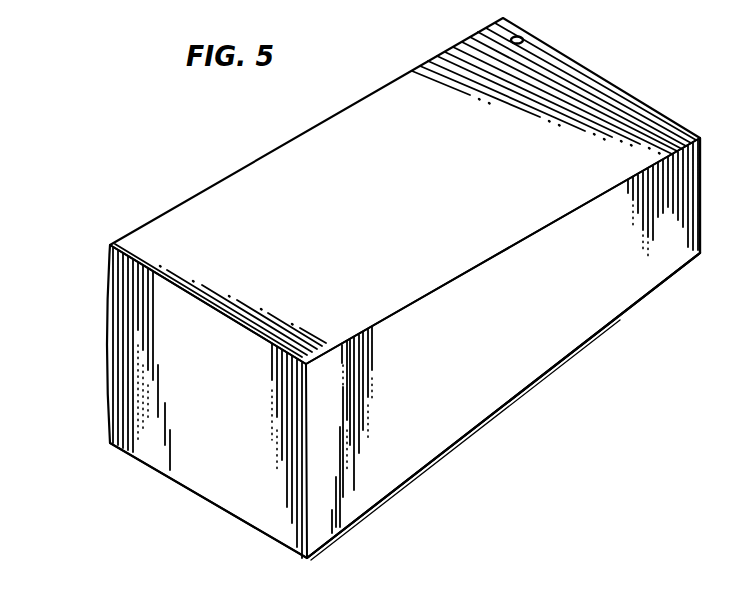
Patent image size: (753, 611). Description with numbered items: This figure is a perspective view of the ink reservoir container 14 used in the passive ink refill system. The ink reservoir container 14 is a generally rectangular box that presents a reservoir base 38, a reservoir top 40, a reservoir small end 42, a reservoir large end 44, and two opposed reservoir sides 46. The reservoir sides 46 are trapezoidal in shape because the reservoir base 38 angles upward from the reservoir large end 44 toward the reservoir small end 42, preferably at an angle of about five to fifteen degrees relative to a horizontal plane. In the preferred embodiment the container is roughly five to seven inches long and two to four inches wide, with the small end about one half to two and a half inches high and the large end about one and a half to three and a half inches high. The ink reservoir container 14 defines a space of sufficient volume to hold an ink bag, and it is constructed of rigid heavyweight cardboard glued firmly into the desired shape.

The ink reservoir container 14 is at (85, 274).
The reservoir base 38 is at (570, 352).
The reservoir top 40 is at (227, 200).
The reservoir small end 42 is at (700, 218).
The reservoir large end 44 is at (208, 430).
The reservoir sides 46 is at (598, 288).